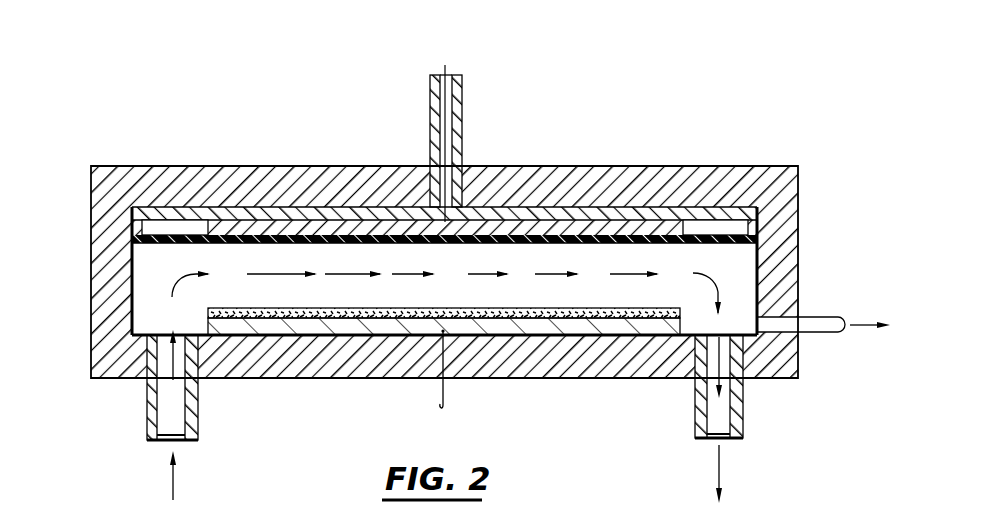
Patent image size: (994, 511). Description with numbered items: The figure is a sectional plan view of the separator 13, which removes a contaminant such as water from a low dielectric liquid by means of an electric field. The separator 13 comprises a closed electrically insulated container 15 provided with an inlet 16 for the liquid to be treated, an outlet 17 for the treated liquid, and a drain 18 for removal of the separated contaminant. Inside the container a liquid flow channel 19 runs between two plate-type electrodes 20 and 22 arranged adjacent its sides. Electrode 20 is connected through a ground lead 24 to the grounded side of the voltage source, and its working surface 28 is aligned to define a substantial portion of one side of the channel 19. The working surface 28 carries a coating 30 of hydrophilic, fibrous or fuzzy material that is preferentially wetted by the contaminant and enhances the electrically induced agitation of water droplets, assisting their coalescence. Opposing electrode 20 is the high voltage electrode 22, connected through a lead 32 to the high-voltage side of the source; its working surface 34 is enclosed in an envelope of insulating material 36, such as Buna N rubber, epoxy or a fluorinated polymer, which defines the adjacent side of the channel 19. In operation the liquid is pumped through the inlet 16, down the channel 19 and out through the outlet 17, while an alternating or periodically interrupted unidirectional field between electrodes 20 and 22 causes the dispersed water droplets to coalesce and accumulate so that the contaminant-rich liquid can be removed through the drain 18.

The separator 13 is at (133, 150).
The closed electrically insulated container 15 is at (790, 180).
The inlet 16 is at (198, 385).
The outlet 17 is at (743, 405).
The drain 18 is at (827, 317).
The liquid flow channel 19 is at (677, 255).
The plate-type electrode 20 is at (518, 327).
The high voltage electrode 22 is at (322, 225).
The ground lead 24 is at (443, 395).
The working surface 28 is at (260, 317).
The hydrophilic fibrous coating 30 is at (598, 311).
The lead 32 is at (445, 65).
The working surface 34 is at (248, 235).
The insulating material 36 is at (182, 215).